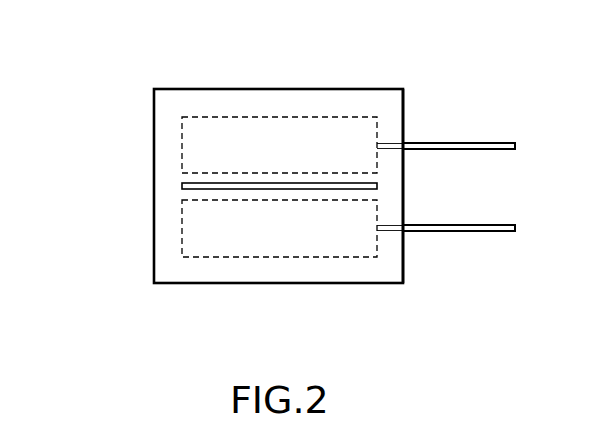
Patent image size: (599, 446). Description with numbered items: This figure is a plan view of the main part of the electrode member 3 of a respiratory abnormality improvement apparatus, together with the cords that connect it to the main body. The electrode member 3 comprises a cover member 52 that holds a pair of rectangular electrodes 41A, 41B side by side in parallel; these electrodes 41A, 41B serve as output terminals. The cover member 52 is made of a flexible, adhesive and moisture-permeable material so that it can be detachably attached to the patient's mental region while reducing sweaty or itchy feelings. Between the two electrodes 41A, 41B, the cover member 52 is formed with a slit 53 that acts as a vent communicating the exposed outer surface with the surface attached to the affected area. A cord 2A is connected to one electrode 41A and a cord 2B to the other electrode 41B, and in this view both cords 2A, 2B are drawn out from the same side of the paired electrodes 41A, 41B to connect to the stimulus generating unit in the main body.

The electrode member 3 is at (180, 85).
The cover member 52 is at (405, 108).
The electrode 41A is at (293, 117).
The electrode 41B is at (293, 257).
The slit 53 is at (183, 183).
The cord 2A is at (482, 143).
The cord 2B is at (481, 227).